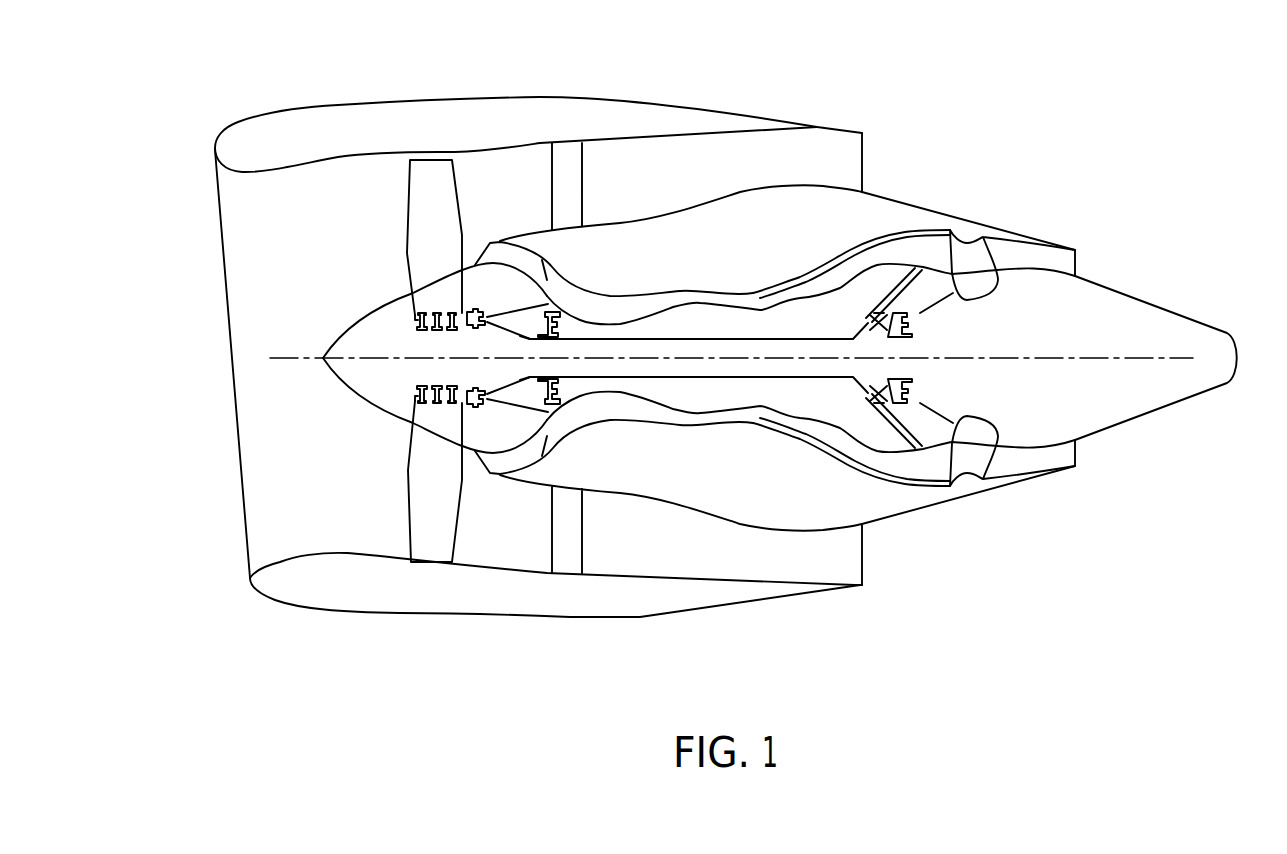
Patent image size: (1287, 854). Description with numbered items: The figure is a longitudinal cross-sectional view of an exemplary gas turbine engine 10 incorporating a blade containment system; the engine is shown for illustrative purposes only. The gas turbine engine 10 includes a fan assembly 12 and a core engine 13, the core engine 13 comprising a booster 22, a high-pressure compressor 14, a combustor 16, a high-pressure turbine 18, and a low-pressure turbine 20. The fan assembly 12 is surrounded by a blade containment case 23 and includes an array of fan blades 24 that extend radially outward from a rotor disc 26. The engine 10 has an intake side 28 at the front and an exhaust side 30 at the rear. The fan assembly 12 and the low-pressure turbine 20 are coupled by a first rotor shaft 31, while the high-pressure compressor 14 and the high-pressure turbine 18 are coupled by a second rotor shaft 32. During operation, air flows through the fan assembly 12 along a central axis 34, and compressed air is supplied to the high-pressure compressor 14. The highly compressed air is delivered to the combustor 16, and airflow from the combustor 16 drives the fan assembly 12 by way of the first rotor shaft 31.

The gas turbine engine 10 is at (1095, 78).
The fan assembly 12 is at (417, 495).
The core engine 13 is at (713, 212).
The high-pressure compressor 14 is at (607, 310).
The combustor 16 is at (768, 298).
The high-pressure turbine 18 is at (818, 426).
The low-pressure turbine 20 is at (890, 252).
The booster 22 is at (517, 253).
The blade containment case 23 is at (750, 125).
The fan blades 24 is at (415, 218).
The rotor disc 26 is at (362, 387).
The intake side 28 is at (215, 298).
The exhaust side 30 is at (868, 161).
The first rotor shaft 31 is at (657, 340).
The second rotor shaft 32 is at (647, 407).
The central axis 34 is at (1047, 358).